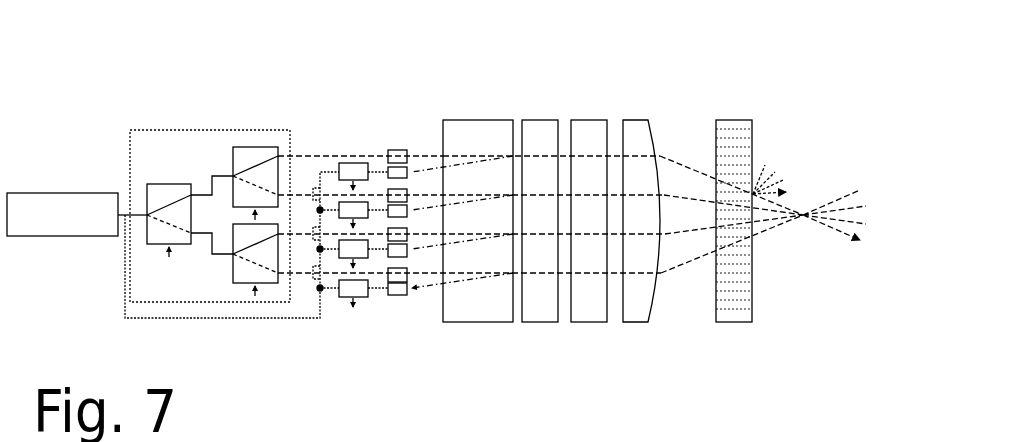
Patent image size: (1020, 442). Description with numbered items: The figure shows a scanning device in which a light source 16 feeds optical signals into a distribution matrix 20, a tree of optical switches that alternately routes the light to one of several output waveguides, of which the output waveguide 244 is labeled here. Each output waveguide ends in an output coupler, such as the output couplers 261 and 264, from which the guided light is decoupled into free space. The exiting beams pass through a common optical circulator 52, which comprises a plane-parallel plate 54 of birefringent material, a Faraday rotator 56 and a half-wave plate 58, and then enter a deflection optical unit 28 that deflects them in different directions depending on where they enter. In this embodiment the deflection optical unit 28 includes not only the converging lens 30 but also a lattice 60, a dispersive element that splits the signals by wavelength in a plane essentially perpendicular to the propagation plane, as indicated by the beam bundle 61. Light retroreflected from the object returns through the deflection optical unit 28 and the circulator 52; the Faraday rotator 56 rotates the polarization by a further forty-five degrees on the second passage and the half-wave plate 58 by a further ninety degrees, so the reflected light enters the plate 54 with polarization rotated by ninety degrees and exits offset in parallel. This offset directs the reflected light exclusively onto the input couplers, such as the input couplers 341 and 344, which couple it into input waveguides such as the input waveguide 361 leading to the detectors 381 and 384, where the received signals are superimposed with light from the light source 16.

The light source 16 is at (84, 193).
The distribution matrix 20 is at (173, 130).
The output waveguide 244 is at (330, 156).
The detector 384 is at (357, 162).
The input coupler 344 is at (412, 166).
The output coupler 264 is at (396, 150).
The plane-parallel plate 54 is at (487, 123).
The Faraday rotator 56 is at (538, 123).
The half-wave plate 58 is at (587, 123).
The converging lens 30 is at (640, 123).
The lattice 60 is at (737, 123).
The beam bundle 61 is at (787, 157).
The detector 381 is at (347, 298).
The input waveguide 361 is at (379, 292).
The input coupler 341 is at (399, 297).
The output coupler 261 is at (414, 286).
The common optical circulator 52 is at (542, 243).
The deflection optical unit 28 is at (665, 243).